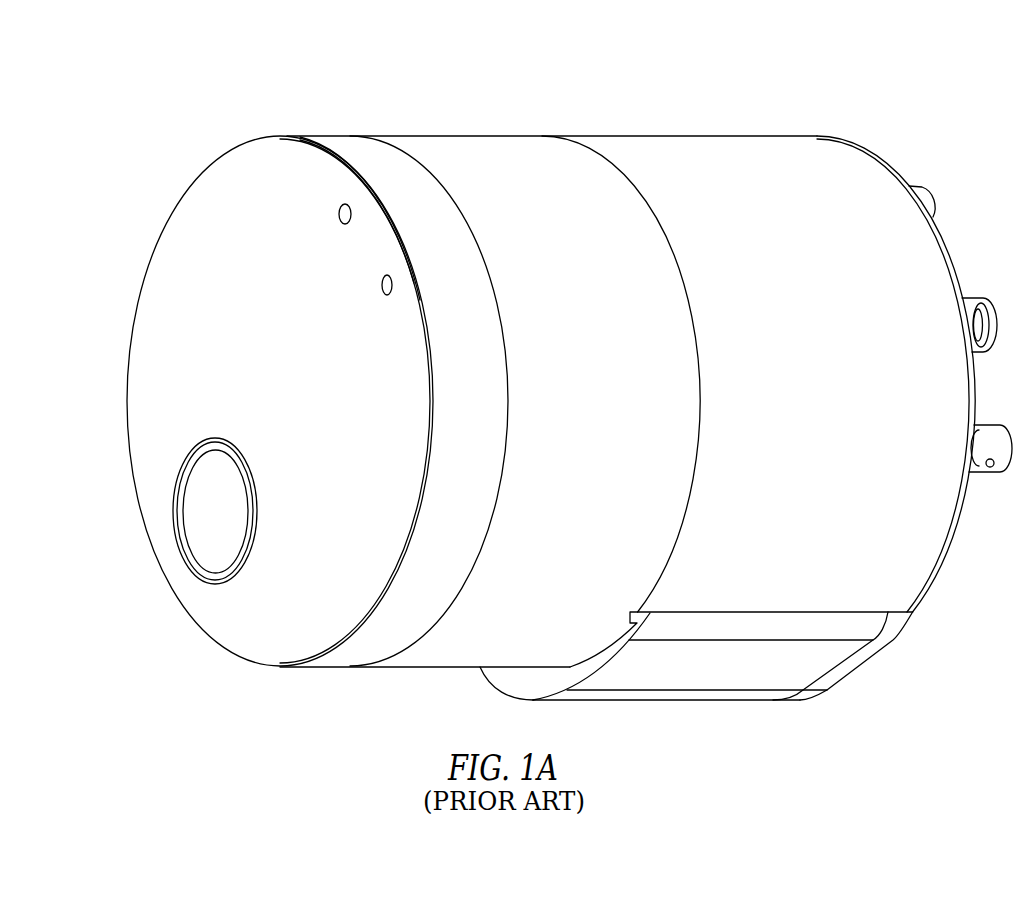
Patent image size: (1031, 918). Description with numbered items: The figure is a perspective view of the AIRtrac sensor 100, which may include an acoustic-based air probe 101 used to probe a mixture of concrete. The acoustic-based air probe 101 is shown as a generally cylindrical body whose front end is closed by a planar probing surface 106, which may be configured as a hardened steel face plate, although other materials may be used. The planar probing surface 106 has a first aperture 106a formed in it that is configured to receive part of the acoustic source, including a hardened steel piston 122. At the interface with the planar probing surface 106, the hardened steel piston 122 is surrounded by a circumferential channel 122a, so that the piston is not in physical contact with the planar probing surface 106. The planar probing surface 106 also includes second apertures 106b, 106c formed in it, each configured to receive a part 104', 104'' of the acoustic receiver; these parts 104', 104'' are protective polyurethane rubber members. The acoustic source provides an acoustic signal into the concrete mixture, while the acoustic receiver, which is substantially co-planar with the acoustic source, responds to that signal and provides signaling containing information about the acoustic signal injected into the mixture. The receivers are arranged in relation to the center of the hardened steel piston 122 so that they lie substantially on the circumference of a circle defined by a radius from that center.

The AIRtrac sensor 100 is at (805, 100).
The acoustic-based air probe 101 is at (470, 135).
The part of the acoustic receiver 104' is at (410, 218).
The part of the acoustic receiver 104'' is at (431, 211).
The planar probing surface 106 is at (177, 208).
The first aperture 106a is at (198, 455).
The second aperture 106b is at (381, 285).
The second aperture 106c is at (338, 213).
The hardened steel piston 122 is at (197, 507).
The circumferential channel 122a is at (216, 572).